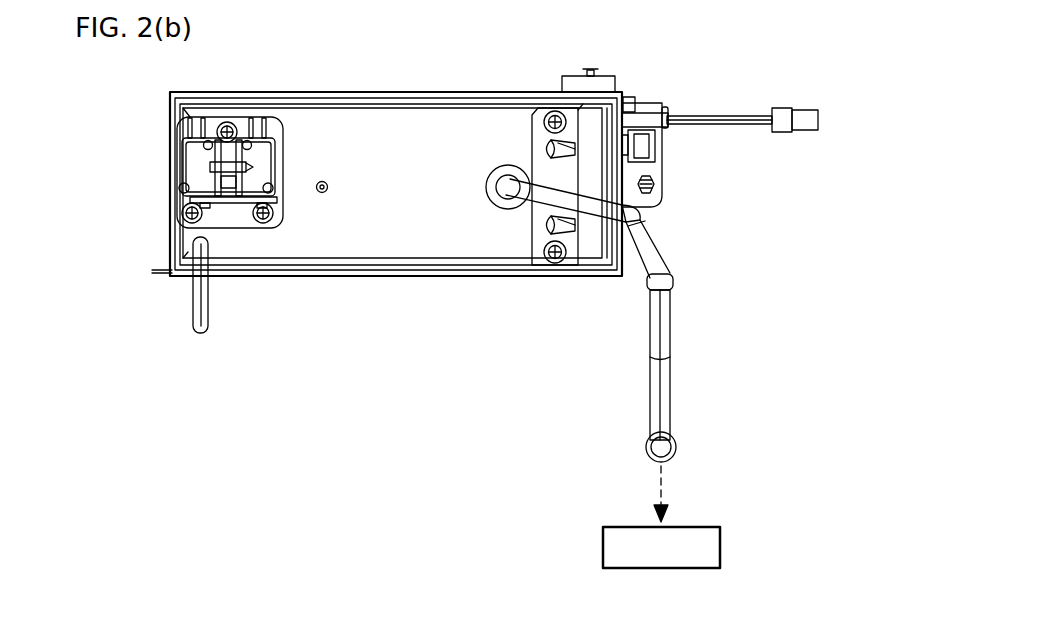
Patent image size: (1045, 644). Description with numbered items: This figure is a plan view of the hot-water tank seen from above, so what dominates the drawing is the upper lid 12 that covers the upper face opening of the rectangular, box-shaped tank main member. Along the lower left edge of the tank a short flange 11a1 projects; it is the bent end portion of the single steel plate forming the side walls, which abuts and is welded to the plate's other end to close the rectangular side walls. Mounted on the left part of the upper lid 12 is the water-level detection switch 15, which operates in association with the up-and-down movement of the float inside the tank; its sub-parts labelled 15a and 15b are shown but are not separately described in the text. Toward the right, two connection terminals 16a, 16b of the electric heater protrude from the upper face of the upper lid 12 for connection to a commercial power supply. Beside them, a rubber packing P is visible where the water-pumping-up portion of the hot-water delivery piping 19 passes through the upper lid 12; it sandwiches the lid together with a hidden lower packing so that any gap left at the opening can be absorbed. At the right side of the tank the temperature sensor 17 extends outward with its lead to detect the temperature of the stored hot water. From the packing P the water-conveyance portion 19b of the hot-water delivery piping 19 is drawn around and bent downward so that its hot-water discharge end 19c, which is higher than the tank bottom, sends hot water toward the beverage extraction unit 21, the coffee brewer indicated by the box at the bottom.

The upper lid 12 is at (392, 194).
The flange 11a1 is at (157, 275).
The water-level detection switch 15 is at (164, 172).
The switch body 15a is at (196, 180).
The switch actuator 15b is at (212, 147).
The connection terminal 16a is at (545, 155).
The connection terminal 16b is at (545, 233).
The rubber packing P is at (492, 187).
The temperature sensor 17 is at (669, 113).
The hot-water delivery piping 19 is at (669, 333).
The water-conveyance portion 19b is at (652, 240).
The hot-water discharge end 19c is at (677, 442).
The beverage extraction unit 21 is at (603, 532).